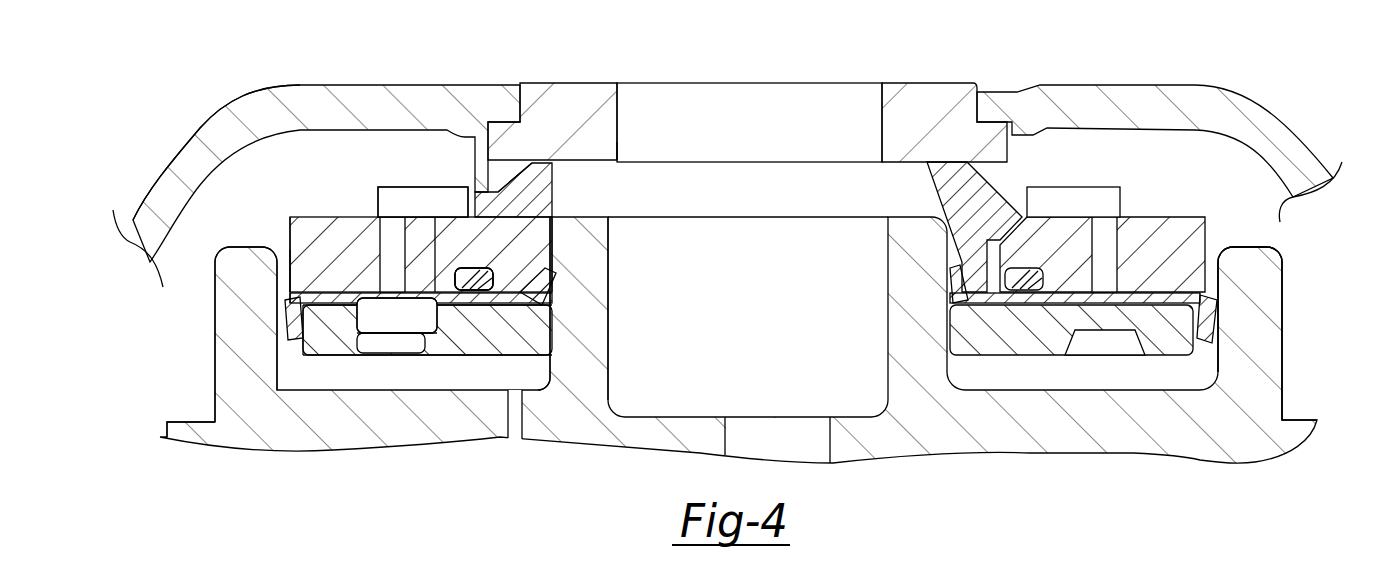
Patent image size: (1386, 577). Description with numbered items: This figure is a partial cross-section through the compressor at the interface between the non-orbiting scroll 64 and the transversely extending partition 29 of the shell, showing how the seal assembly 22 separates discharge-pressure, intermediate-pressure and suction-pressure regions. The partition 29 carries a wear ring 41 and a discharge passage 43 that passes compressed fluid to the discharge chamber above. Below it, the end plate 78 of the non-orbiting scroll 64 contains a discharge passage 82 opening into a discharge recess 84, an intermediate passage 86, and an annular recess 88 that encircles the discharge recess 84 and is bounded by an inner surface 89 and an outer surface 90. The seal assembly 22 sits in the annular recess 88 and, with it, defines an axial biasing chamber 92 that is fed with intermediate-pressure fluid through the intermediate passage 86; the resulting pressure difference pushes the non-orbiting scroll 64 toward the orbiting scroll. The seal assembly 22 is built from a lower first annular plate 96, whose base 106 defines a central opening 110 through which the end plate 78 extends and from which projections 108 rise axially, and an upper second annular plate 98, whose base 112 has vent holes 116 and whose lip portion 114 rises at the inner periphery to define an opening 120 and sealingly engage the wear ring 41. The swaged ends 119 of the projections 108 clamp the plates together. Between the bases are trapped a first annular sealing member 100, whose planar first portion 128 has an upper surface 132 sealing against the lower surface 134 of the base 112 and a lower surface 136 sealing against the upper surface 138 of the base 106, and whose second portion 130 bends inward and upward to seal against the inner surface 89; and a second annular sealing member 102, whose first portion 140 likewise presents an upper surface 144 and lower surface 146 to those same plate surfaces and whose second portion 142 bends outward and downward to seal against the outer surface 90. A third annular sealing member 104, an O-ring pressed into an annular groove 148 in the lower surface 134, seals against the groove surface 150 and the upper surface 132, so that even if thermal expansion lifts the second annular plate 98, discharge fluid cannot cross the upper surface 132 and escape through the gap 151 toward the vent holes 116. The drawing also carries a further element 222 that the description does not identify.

The seal assembly 22 is at (300, 163).
The partition 29 is at (410, 95).
The wear ring 41 is at (578, 95).
The discharge passage 43 is at (617, 105).
The non-orbiting scroll 64 is at (1303, 313).
The end plate 78 is at (1230, 415).
The discharge passage 82 is at (727, 430).
The discharge recess 84 is at (610, 262).
The intermediate passage 86 is at (515, 425).
The annular recess 88 is at (1135, 390).
The inner surface 89 is at (545, 392).
The outer surface 90 is at (290, 380).
The axial biasing chamber 92 is at (300, 376).
The first annular plate 96 is at (443, 375).
The second annular plate 98 is at (320, 213).
The first annular sealing member 100 is at (528, 280).
The second annular sealing member 102 is at (288, 302).
The third annular sealing member 104 is at (468, 265).
The base 106 is at (368, 322).
The projections 108 is at (395, 195).
The central opening 110 is at (548, 340).
The base 112 is at (298, 278).
The lip portion 114 is at (617, 142).
The vent holes 116 is at (387, 240).
The ends 119 is at (405, 195).
The opening 120 is at (928, 165).
The first portion 128 is at (472, 310).
The second portion 130 is at (540, 300).
The upper surface 132 is at (522, 200).
The lower surface 134 is at (498, 302).
The lower surface 136 is at (430, 312).
The upper surface 138 is at (436, 268).
The first portion 140 is at (336, 308).
The second portion 142 is at (280, 335).
The upper surface 144 is at (340, 290).
The lower surface 146 is at (322, 308).
The annular groove 148 is at (537, 175).
The surface 150 is at (484, 265).
The gap 151 is at (390, 325).
The lower element 222 is at (1125, 576).